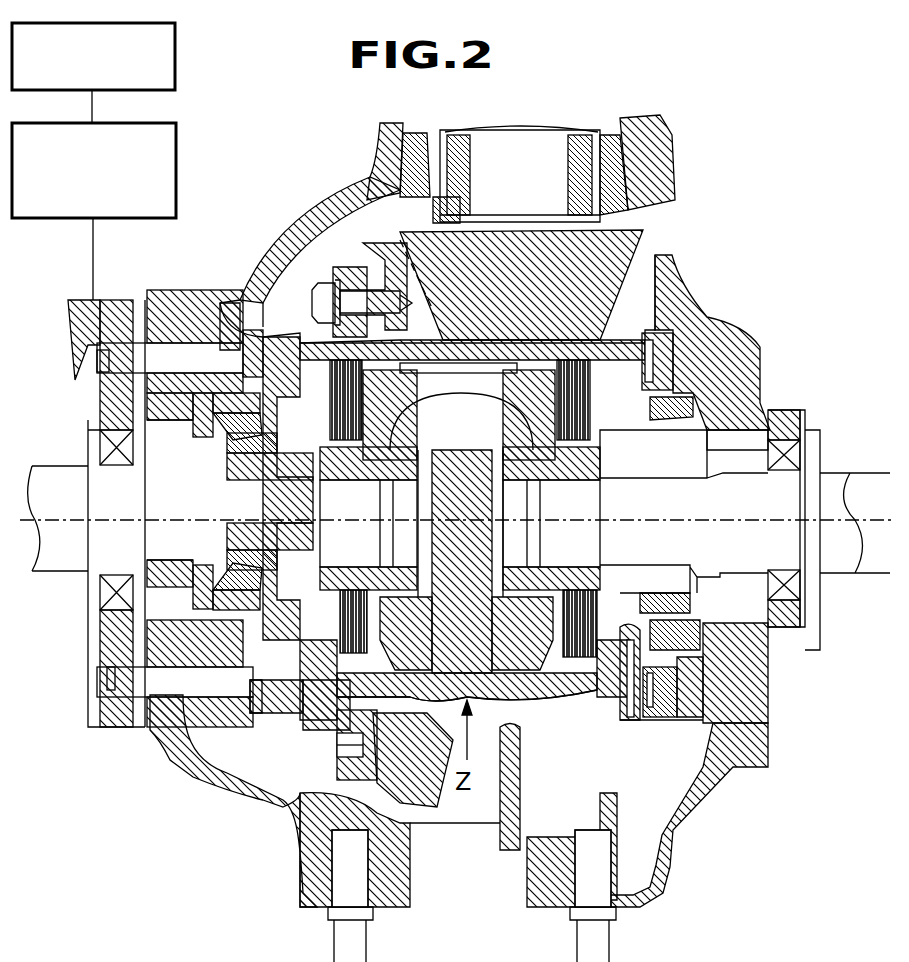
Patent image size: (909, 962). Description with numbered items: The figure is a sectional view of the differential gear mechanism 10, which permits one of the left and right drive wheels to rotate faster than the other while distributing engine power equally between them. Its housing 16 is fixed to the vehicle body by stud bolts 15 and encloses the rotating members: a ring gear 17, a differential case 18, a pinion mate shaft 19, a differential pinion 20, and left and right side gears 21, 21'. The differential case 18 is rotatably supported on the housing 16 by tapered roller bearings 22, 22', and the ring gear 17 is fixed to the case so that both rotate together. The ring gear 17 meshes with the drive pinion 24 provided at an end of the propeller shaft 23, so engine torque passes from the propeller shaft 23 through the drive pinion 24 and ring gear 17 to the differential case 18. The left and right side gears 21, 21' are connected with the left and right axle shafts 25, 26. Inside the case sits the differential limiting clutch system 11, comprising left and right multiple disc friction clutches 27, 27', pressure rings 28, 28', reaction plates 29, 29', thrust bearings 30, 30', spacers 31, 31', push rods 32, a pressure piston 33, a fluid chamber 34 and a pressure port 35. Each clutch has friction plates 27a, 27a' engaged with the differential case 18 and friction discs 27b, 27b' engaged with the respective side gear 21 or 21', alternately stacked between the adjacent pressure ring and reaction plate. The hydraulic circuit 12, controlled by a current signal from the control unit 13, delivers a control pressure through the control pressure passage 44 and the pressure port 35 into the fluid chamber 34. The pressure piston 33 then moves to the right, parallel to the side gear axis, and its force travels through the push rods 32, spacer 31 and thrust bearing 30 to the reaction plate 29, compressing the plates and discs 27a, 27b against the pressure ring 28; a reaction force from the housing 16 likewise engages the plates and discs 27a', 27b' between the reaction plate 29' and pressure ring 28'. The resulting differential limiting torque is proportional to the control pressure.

The differential gear mechanism 10 is at (490, 336).
The differential limiting clutch system 11 is at (307, 317).
The hydraulic circuit 12 is at (176, 195).
The control unit 13 is at (176, 47).
The stud bolts 15 is at (328, 940).
The housing 16 is at (378, 165).
The ring gear 17 is at (350, 210).
The differential case 18 is at (600, 660).
The pinion mate shaft 19 is at (473, 660).
The differential pinion 20 is at (505, 662).
The left side gear 21 is at (368, 480).
The right side gear 21' is at (551, 480).
The tapered roller bearing 22 is at (170, 495).
The tapered roller bearing 22' is at (730, 536).
The propeller shaft 23 is at (500, 145).
The drive pinion 24 is at (640, 250).
The left axle shaft 25 is at (70, 466).
The right axle shaft 26 is at (852, 575).
The left multiple disc friction clutch 27 is at (271, 350).
The right multiple disc friction clutch 27' is at (706, 342).
The friction plates 27a is at (326, 720).
The friction plates 27a' is at (616, 694).
The friction discs 27b is at (406, 736).
The friction discs 27b' is at (556, 548).
The pressure ring 28 is at (472, 295).
The pressure ring 28' is at (658, 171).
The reaction plate 29 is at (252, 501).
The reaction plate 29' is at (684, 495).
The thrust bearing 30 is at (232, 793).
The thrust bearing 30' is at (673, 809).
The spacer 31 is at (173, 725).
The spacer 31' is at (720, 688).
The push rods 32 is at (160, 330).
The pressure piston 33 is at (100, 365).
The fluid chamber 34 is at (108, 680).
The pressure port 35 is at (86, 300).
The control pressure passage 44 is at (95, 230).